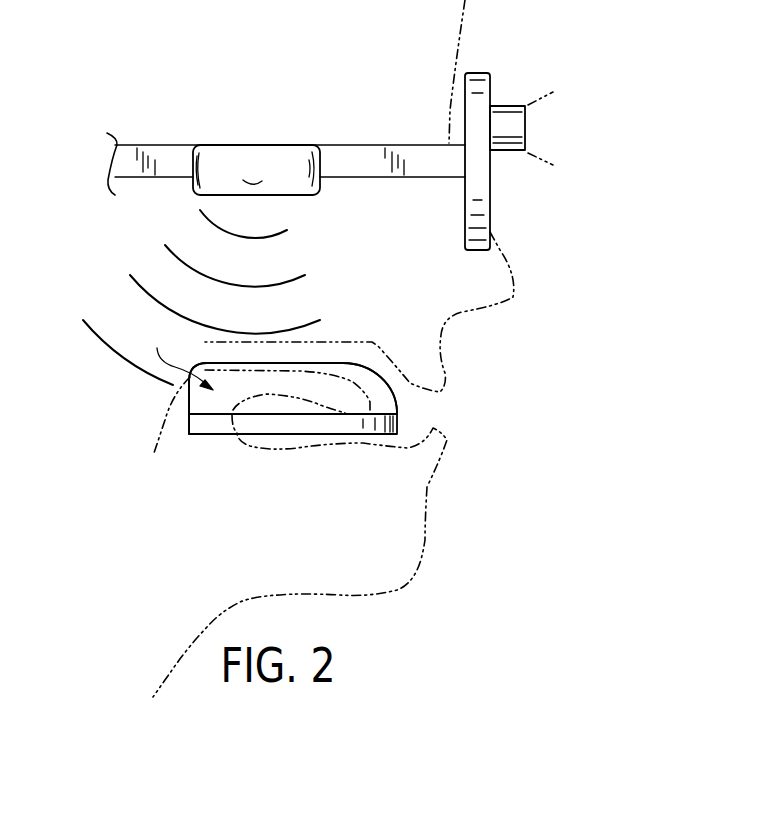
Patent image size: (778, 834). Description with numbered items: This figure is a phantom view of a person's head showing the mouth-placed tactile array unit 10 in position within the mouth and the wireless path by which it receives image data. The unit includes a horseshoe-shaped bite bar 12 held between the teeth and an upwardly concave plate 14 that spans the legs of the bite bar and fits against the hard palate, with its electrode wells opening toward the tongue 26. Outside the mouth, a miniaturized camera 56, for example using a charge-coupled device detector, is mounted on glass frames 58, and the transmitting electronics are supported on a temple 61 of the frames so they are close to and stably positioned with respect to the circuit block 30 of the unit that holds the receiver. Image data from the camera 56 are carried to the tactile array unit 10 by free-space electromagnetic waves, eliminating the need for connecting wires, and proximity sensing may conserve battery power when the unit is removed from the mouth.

The tactile array unit 10 is at (197, 434).
The bite bar 12 is at (215, 428).
The concave plate 14 is at (187, 403).
The tongue 26 is at (366, 399).
The circuit block 30 is at (178, 353).
The camera 56 is at (505, 106).
The glass frames 58 is at (492, 173).
The temple 61 is at (165, 158).